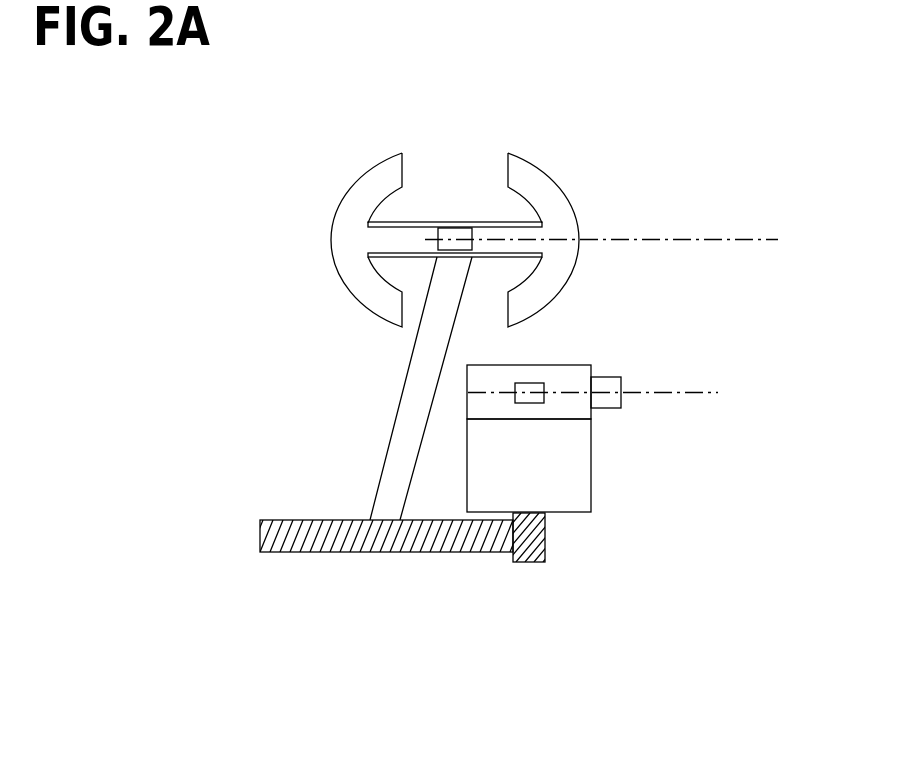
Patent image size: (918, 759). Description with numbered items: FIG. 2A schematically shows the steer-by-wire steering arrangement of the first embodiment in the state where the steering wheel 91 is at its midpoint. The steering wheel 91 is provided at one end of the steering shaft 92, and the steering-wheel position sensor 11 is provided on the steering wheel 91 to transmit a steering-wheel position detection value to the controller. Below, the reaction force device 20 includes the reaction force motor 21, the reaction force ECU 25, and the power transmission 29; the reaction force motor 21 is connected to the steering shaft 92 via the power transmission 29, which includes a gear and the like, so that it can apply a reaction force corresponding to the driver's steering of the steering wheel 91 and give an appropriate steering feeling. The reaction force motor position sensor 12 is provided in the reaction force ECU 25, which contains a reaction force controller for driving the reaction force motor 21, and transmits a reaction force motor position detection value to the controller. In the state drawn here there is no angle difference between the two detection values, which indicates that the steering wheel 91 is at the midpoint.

The steering-wheel position sensor 11 is at (462, 235).
The reaction force motor position sensor 12 is at (537, 384).
The reaction force device 20 is at (592, 403).
The reaction force motor 21 is at (573, 487).
The reaction force ECU 25 is at (580, 375).
The power transmission 29 is at (538, 538).
The steering wheel 91 is at (550, 193).
The steering shaft 92 is at (405, 433).